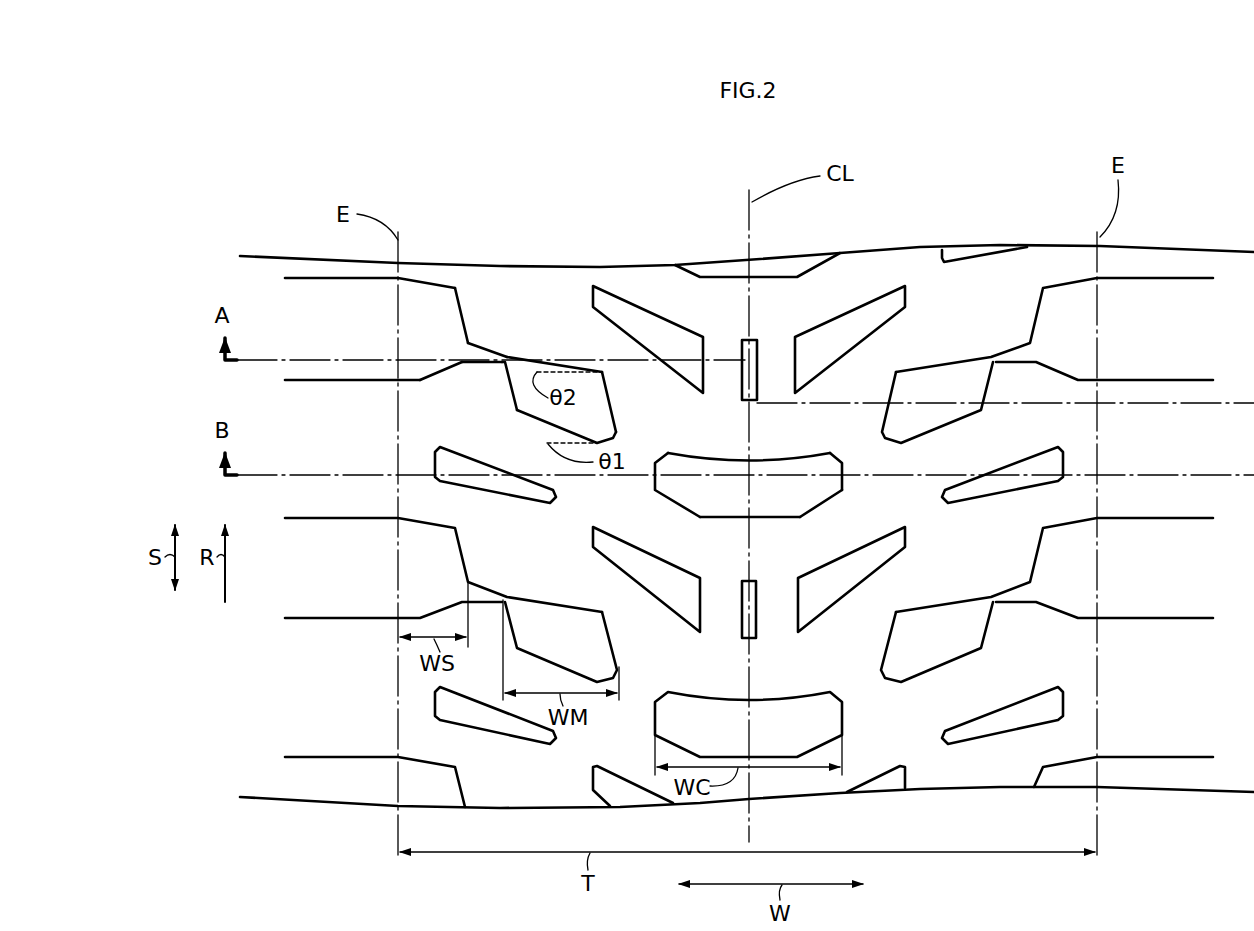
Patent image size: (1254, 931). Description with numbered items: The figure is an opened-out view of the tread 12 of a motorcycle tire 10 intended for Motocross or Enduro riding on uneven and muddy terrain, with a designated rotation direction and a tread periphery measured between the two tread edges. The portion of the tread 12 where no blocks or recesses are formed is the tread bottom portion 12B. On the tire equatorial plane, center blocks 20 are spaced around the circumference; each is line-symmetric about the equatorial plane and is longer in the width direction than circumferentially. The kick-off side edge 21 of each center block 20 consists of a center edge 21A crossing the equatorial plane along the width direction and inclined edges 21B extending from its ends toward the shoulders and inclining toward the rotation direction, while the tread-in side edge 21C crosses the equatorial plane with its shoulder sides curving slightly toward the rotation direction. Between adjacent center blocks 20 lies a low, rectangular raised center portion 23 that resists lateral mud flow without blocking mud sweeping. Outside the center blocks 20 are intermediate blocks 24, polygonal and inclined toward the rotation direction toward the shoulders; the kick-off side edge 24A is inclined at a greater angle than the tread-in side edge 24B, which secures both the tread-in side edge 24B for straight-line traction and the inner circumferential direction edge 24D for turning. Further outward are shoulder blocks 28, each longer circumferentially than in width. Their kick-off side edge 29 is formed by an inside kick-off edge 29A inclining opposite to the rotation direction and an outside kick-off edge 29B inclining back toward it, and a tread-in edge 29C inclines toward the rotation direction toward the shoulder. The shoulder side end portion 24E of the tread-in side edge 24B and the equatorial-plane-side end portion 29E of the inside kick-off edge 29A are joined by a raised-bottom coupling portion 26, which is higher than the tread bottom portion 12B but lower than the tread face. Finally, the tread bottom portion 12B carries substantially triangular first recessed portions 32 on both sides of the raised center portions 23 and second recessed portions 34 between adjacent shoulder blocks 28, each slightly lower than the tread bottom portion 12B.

The motorcycle tire 10 is at (1152, 170).
The tread 12 is at (936, 243).
The tread bottom portion 12B is at (517, 278).
The center block 20 is at (792, 551).
The edge at kick-off side of center block 21 is at (799, 551).
The center edge 21A is at (763, 520).
The inclined edge 21B is at (826, 506).
The edge at tread-in side of center block 21C is at (717, 457).
The raised center portion 23 is at (758, 346).
The intermediate block 24 is at (587, 390).
The kick-off side edge of intermediate block 24A is at (575, 426).
The tread-in side edge of intermediate block 24B is at (508, 358).
The circumferential direction edge 24D is at (607, 384).
The shoulder side end portion of tread-in side edge 24E is at (491, 348).
The raised-bottom coupling portion 26 is at (481, 346).
The shoulder block 28 is at (394, 386).
The kick-off side edge of shoulder block 29 is at (389, 332).
The inside kick-off edge 29A is at (439, 379).
The outside kick-off edge 29B is at (407, 385).
The tread-in edge of shoulder block 29C is at (425, 283).
The tire equatorial plane side end portion of kick-off edge 29E is at (467, 340).
The first recessed portion 32 is at (665, 598).
The second recessed portion 34 is at (500, 487).